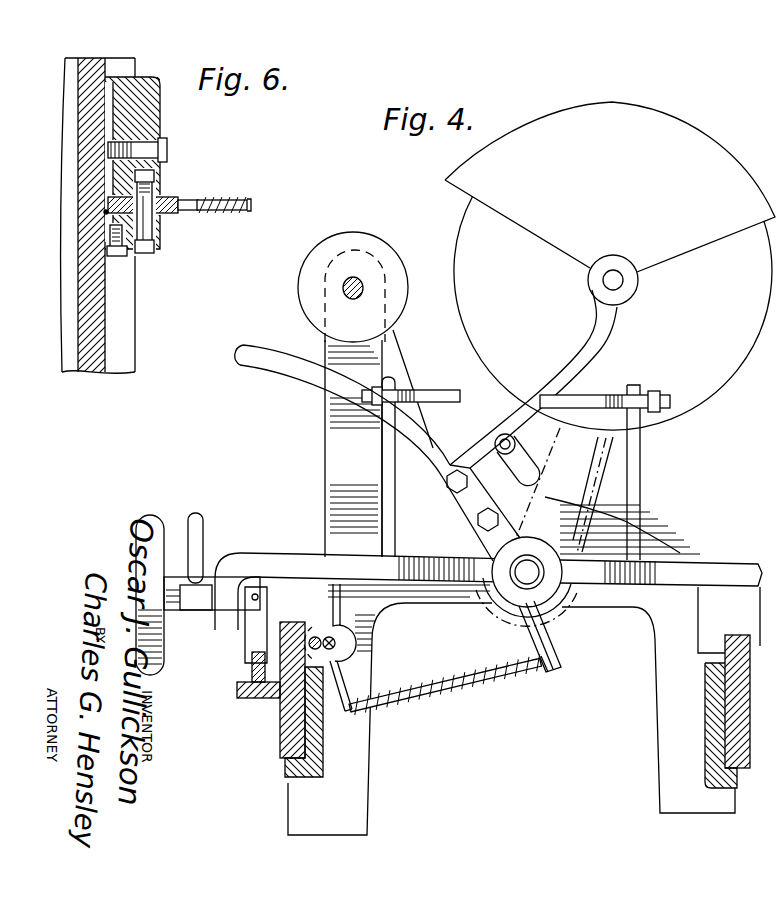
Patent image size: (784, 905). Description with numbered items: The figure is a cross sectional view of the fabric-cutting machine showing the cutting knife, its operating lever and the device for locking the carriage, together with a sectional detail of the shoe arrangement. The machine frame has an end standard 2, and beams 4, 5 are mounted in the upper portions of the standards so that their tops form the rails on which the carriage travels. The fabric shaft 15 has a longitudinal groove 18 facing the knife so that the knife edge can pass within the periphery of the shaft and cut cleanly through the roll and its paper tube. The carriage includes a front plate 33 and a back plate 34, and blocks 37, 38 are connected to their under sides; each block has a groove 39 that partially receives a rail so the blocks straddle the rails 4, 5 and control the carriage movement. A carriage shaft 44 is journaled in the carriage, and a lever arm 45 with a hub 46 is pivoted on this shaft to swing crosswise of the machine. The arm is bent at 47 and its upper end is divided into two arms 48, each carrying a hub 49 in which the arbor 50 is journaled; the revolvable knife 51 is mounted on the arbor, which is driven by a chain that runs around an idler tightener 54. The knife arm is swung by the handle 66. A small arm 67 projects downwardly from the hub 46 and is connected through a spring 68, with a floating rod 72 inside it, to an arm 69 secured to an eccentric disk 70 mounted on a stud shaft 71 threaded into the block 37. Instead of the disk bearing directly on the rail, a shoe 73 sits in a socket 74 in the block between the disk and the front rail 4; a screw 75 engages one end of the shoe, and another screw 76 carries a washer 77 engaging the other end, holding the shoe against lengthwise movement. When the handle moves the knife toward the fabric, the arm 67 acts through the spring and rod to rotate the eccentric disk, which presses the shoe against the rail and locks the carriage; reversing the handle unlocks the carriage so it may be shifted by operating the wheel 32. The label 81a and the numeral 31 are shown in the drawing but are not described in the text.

In FIG. 4, the end standard 2 is at (511, 582).
In FIG. 6, the beam 4 is at (85, 368).
In FIG. 4, the beam 4 is at (278, 716).
In FIG. 4, the beam 5 is at (749, 674).
In FIG. 4, the fabric shaft 15 is at (354, 299).
In FIG. 4, the groove 18 is at (374, 290).
In FIG. 4, the rail 31 is at (356, 585).
In FIG. 4, the wheel 32 is at (165, 650).
In FIG. 4, the carriage plate 33 is at (257, 591).
In FIG. 4, the carriage plate 34 is at (661, 572).
In FIG. 6, the block 37 is at (160, 92).
In FIG. 4, the block 37 is at (295, 618).
In FIG. 4, the block 38 is at (729, 620).
In FIG. 4, the groove 39 is at (314, 636).
In FIG. 4, the carriage shaft 44 is at (528, 566).
In FIG. 4, the lever arm 45 is at (466, 520).
In FIG. 4, the hub 46 is at (553, 592).
In FIG. 4, the bend 47 is at (455, 450).
In FIG. 4, the arm 48 is at (580, 336).
In FIG. 4, the hub 49 is at (637, 292).
In FIG. 4, the arbor 50 is at (615, 280).
In FIG. 4, the revolvable knife 51 is at (610, 331).
In FIG. 4, the idler tightener 54 is at (538, 464).
In FIG. 4, the handle 66 is at (285, 382).
In FIG. 4, the arm 67 is at (561, 660).
In FIG. 6, the spring 68 is at (244, 213).
In FIG. 4, the spring 68 is at (492, 684).
In FIG. 6, the arm 69 is at (182, 211).
In FIG. 4, the arm 69 is at (348, 685).
In FIG. 6, the eccentric disk 70 is at (173, 197).
In FIG. 4, the eccentric disk 70 is at (356, 648).
In FIG. 6, the stud shaft 71 is at (150, 256).
In FIG. 4, the stud shaft 71 is at (329, 636).
In FIG. 6, the floating rod 72 is at (252, 205).
In FIG. 4, the floating rod 72 is at (541, 658).
In FIG. 6, the shoe 73 is at (106, 212).
In FIG. 6, the socket 74 is at (114, 131).
In FIG. 6, the screw 75 is at (168, 152).
In FIG. 6, the screw 76 is at (122, 262).
In FIG. 6, the washer 77 is at (110, 258).
In FIG. 4, the guide line 81a is at (610, 494).